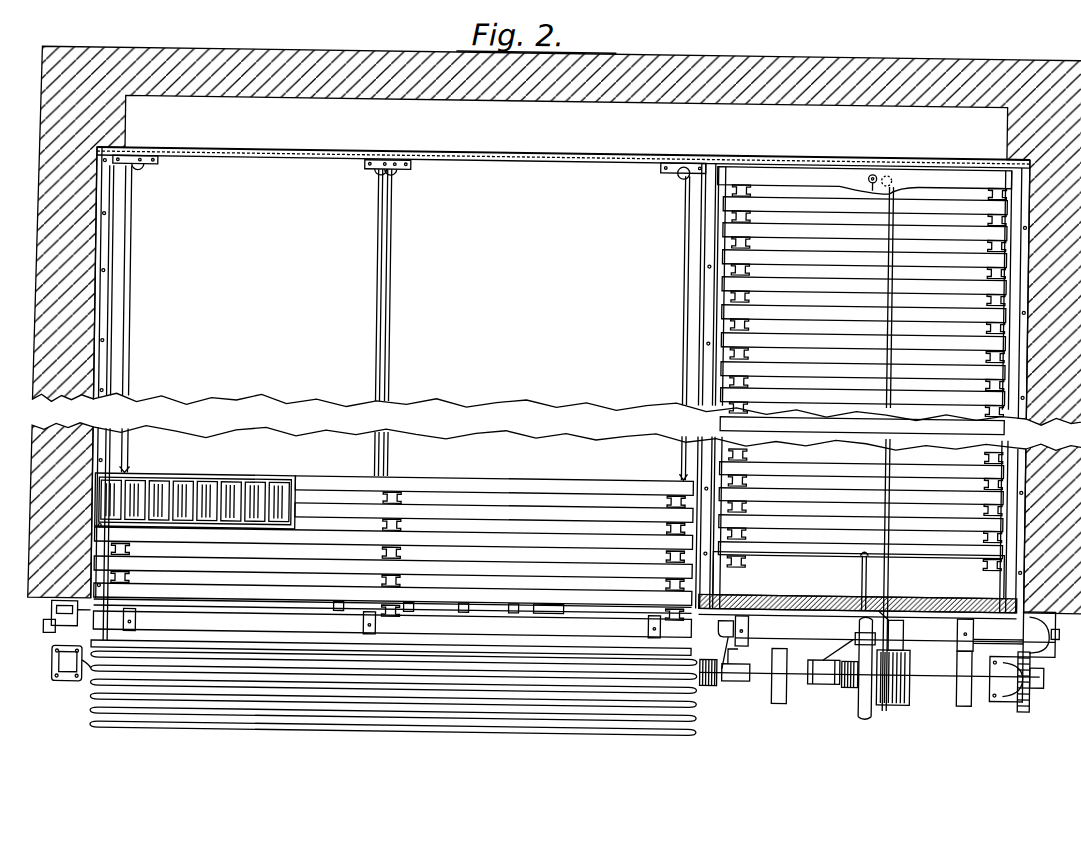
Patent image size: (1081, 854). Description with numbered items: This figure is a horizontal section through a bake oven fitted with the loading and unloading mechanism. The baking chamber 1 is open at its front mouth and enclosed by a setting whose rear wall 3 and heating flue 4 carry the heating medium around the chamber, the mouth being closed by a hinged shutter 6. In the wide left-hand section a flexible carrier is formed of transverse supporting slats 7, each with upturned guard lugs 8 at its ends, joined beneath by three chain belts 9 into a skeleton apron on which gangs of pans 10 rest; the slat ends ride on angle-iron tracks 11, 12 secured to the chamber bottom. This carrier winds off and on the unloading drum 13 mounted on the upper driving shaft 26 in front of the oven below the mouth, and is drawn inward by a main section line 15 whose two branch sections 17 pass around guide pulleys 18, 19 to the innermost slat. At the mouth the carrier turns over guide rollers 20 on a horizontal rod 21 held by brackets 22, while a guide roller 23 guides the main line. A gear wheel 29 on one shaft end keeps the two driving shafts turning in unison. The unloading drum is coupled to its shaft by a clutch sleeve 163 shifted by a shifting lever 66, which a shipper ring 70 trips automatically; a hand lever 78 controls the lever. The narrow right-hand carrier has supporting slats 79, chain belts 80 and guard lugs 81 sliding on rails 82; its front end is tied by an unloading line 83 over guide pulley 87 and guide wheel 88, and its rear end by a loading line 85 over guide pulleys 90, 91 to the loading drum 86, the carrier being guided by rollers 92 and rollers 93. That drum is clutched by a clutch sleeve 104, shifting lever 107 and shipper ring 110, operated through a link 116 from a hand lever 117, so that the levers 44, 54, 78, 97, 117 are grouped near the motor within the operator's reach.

The baking chamber 1 is at (498, 228).
The rear wall 3 is at (707, 53).
The heating flue 4 is at (612, 130).
The shutter 6 is at (858, 581).
The supporting slats 7 is at (545, 522).
The guard lugs 8 is at (134, 549).
The chain belts 9 is at (134, 575).
The pans 10 is at (280, 480).
The track 11 is at (112, 300).
The track 12 is at (686, 311).
The unloading drum 13 is at (86, 673).
The main section line 15 is at (388, 550).
The branch sections 17 is at (379, 281).
The guide pulley 18 is at (377, 167).
The guide pulley 19 is at (140, 166).
The guide rollers 20 is at (148, 617).
The horizontal rod 21 is at (1001, 627).
The brackets 22 is at (58, 618).
The guide roller 23 is at (372, 606).
The upper driving shaft 26 is at (940, 666).
The gear wheel 29 is at (1030, 699).
The lever 44 is at (316, 700).
The lever 54 is at (464, 714).
The shifting lever 66 is at (736, 620).
The shipper ring 70 is at (716, 678).
The hand lever 78 is at (414, 712).
The supporting slats 79 is at (862, 390).
The chain belts 80 is at (751, 261).
The guard lugs 81 is at (740, 358).
The rails 82 is at (751, 236).
The unloading line 83 is at (866, 556).
The loading line 85 is at (888, 369).
The loading drum 86 is at (906, 695).
The guide pulley 87 is at (884, 590).
The guide wheel 88 is at (873, 700).
The guide pulley 90 is at (876, 163).
The guide pulley 91 is at (898, 612).
The rollers 92 is at (755, 621).
The rollers 93 is at (787, 694).
The lever 97 is at (522, 712).
The clutch sleeve 104 is at (826, 676).
The shifting lever 107 is at (840, 626).
The shipper ring 110 is at (851, 677).
The link 116 is at (806, 592).
The hand lever 117 is at (586, 712).
The clutch sleeve 163 is at (752, 672).